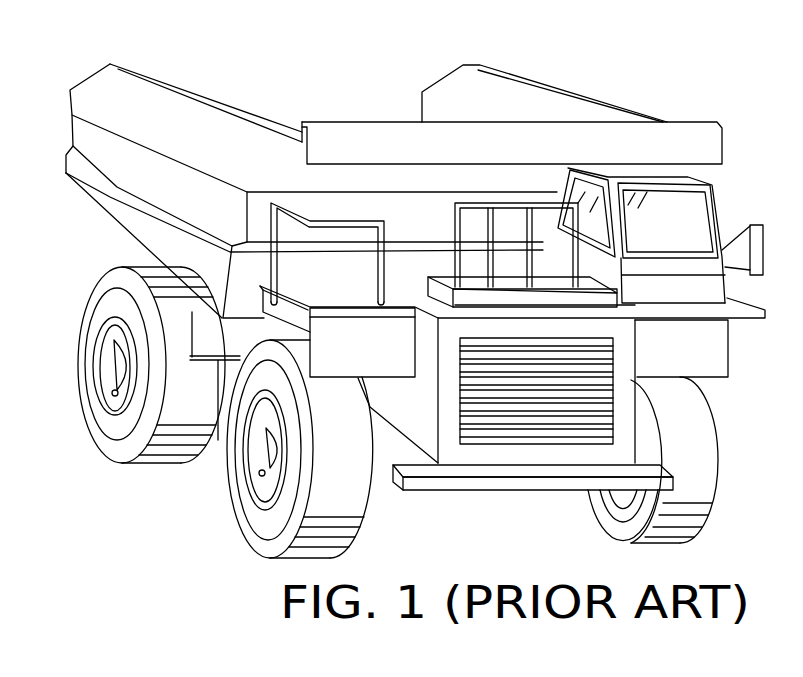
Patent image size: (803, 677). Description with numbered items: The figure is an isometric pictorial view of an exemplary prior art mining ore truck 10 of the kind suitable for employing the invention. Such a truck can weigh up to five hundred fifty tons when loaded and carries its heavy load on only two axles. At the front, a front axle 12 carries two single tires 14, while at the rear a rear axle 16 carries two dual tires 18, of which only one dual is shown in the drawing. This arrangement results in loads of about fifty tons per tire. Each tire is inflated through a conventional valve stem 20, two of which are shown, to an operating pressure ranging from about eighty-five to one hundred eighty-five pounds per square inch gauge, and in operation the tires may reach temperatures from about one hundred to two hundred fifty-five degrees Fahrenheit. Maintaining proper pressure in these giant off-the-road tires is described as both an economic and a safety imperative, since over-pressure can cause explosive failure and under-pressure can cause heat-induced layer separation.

The mining ore truck 10 is at (388, 311).
The front axle 12 is at (249, 459).
The single tires 14 is at (360, 458).
The rear axle 16 is at (108, 360).
The dual tires 18 is at (203, 407).
The valve stem 20 is at (112, 399).